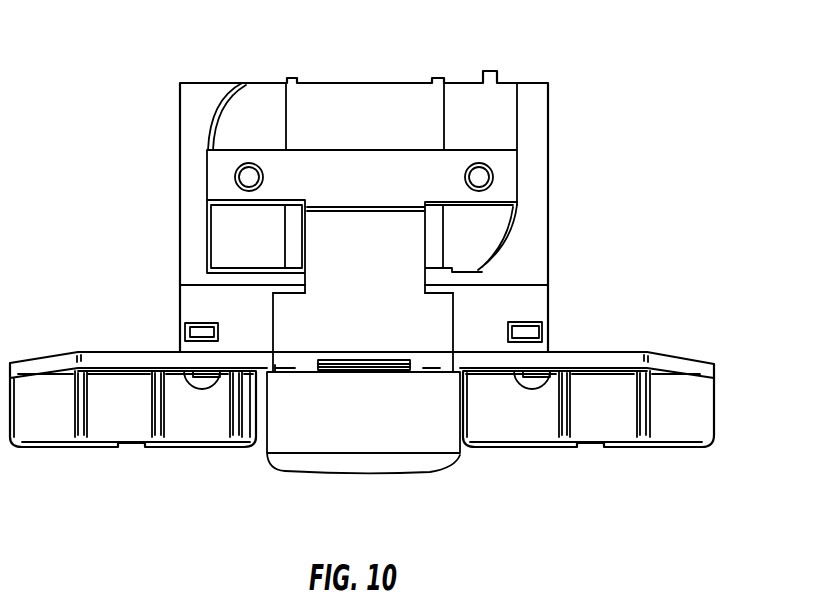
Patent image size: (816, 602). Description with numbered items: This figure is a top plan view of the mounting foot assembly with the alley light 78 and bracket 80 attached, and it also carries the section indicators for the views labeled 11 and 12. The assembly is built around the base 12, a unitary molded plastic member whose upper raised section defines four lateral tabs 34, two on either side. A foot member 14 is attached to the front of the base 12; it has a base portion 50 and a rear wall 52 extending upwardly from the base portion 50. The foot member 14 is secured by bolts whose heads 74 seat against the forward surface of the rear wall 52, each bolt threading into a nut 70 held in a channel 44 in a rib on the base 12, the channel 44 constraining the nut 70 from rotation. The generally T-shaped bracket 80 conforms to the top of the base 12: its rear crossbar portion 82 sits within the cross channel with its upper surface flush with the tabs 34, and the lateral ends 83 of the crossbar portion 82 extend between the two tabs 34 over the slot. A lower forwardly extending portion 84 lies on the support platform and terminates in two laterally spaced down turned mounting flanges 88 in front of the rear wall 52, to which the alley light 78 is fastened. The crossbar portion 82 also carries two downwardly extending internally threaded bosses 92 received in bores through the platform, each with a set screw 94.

The section line 11- 11 is at (165, 180).
The base 12 is at (540, 72).
The foot member 14 is at (661, 446).
The lateral tabs 34 is at (233, 135).
The channel 44 is at (185, 333).
The base portion 50 is at (696, 408).
The rear wall 52 is at (596, 362).
The nut 70 is at (200, 328).
The head 74 is at (203, 387).
The alley light 78 is at (448, 447).
The bracket 80 is at (458, 304).
The rear crossbar portion 82 is at (408, 175).
The lateral ends 83 is at (260, 157).
The lower forwardly extending portion 84 is at (290, 313).
The mounting flanges 88 is at (302, 365).
The bosses 92 is at (236, 168).
The set screw 94 is at (237, 184).